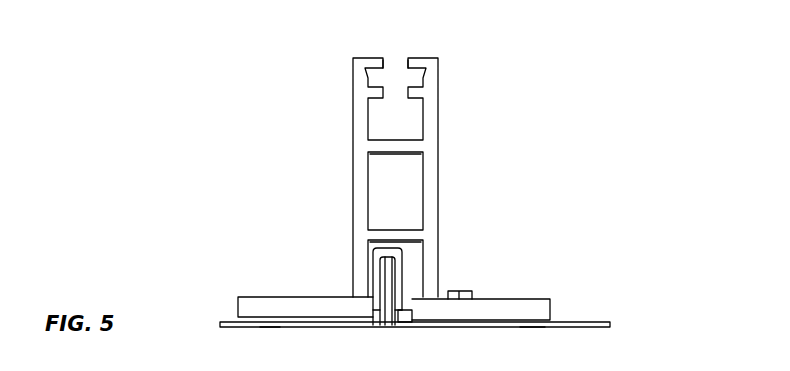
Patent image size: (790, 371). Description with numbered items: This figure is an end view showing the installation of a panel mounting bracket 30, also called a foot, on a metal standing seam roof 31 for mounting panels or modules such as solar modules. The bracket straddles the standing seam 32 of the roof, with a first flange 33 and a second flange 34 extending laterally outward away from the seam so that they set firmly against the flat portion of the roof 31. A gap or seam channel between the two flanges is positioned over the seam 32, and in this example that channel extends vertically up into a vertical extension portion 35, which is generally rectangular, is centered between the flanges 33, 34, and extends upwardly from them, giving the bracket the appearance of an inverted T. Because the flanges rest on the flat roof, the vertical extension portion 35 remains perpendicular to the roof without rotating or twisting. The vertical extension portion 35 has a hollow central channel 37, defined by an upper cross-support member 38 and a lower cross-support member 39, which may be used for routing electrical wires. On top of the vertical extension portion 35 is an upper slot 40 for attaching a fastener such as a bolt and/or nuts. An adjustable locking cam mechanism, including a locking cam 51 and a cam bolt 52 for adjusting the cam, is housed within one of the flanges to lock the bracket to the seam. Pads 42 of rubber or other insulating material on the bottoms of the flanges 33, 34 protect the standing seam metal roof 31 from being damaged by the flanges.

The panel mounting bracket 30 is at (212, 103).
The standing seam roof 31 is at (580, 323).
The seam 32 is at (376, 268).
The first flange 33 is at (523, 299).
The second flange 34 is at (273, 297).
The vertical extension portion 35 is at (438, 122).
The central channel 37 is at (405, 190).
The upper cross-support member 38 is at (382, 138).
The lower cross-support member 39 is at (390, 230).
The upper slot 40 is at (401, 58).
The pad 42 is at (270, 327).
The locking cam 51 is at (403, 322).
The cam bolt 52 is at (467, 291).